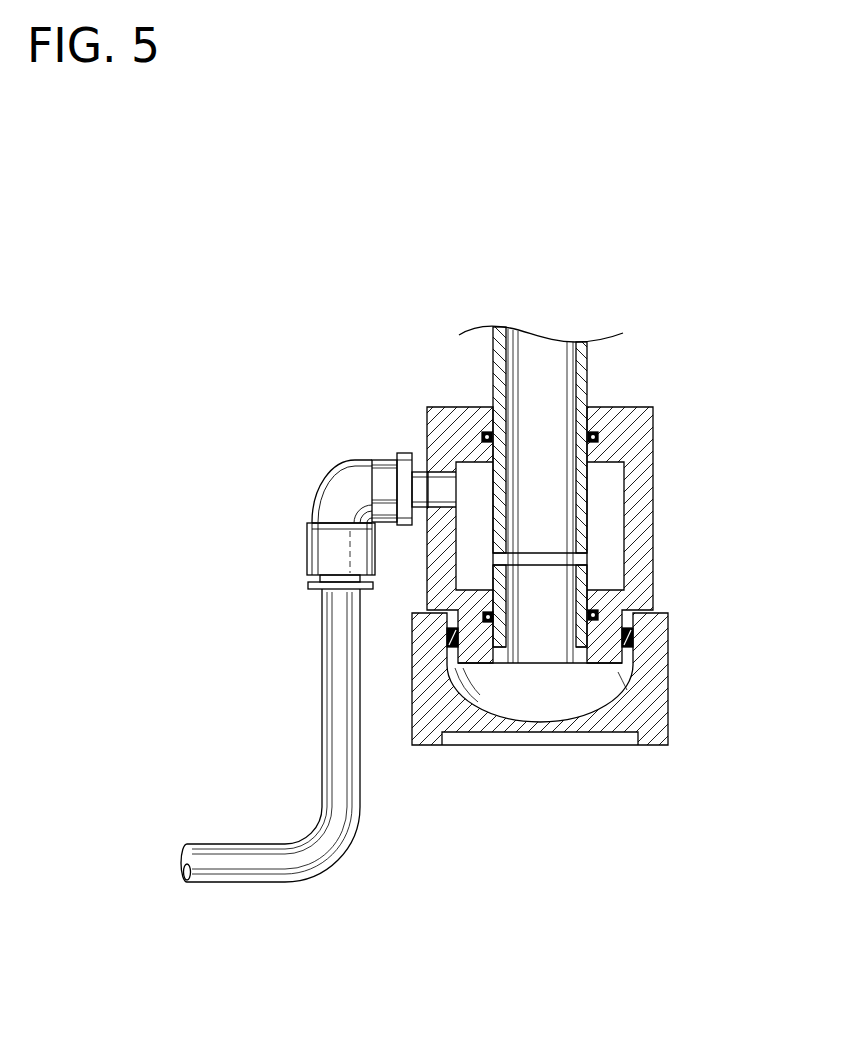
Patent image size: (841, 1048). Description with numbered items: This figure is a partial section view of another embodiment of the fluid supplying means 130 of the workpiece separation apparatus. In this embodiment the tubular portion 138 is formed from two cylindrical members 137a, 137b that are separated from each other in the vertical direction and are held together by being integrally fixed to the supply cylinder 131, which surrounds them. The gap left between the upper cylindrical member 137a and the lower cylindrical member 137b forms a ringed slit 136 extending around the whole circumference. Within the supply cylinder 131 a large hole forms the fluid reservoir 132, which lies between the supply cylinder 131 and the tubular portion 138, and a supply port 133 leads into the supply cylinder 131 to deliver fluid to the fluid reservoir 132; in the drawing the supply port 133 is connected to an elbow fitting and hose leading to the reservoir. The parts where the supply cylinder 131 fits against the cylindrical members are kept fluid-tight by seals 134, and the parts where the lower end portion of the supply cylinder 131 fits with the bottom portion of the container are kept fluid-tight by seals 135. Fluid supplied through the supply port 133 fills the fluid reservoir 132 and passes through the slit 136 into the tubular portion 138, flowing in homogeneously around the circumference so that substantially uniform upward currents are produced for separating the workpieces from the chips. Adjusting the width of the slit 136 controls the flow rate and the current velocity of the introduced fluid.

The fluid supplying means 130 is at (234, 319).
The supply cylinder 131 is at (437, 425).
The fluid reservoir 132 is at (465, 549).
The supply port 133 is at (447, 492).
The seals 134 is at (488, 433).
The seals 135 is at (447, 637).
The ringed slit 136 is at (560, 562).
The cylindrical member 137a is at (578, 392).
The cylindrical member 137b is at (580, 597).
The tubular portion 138 is at (590, 357).